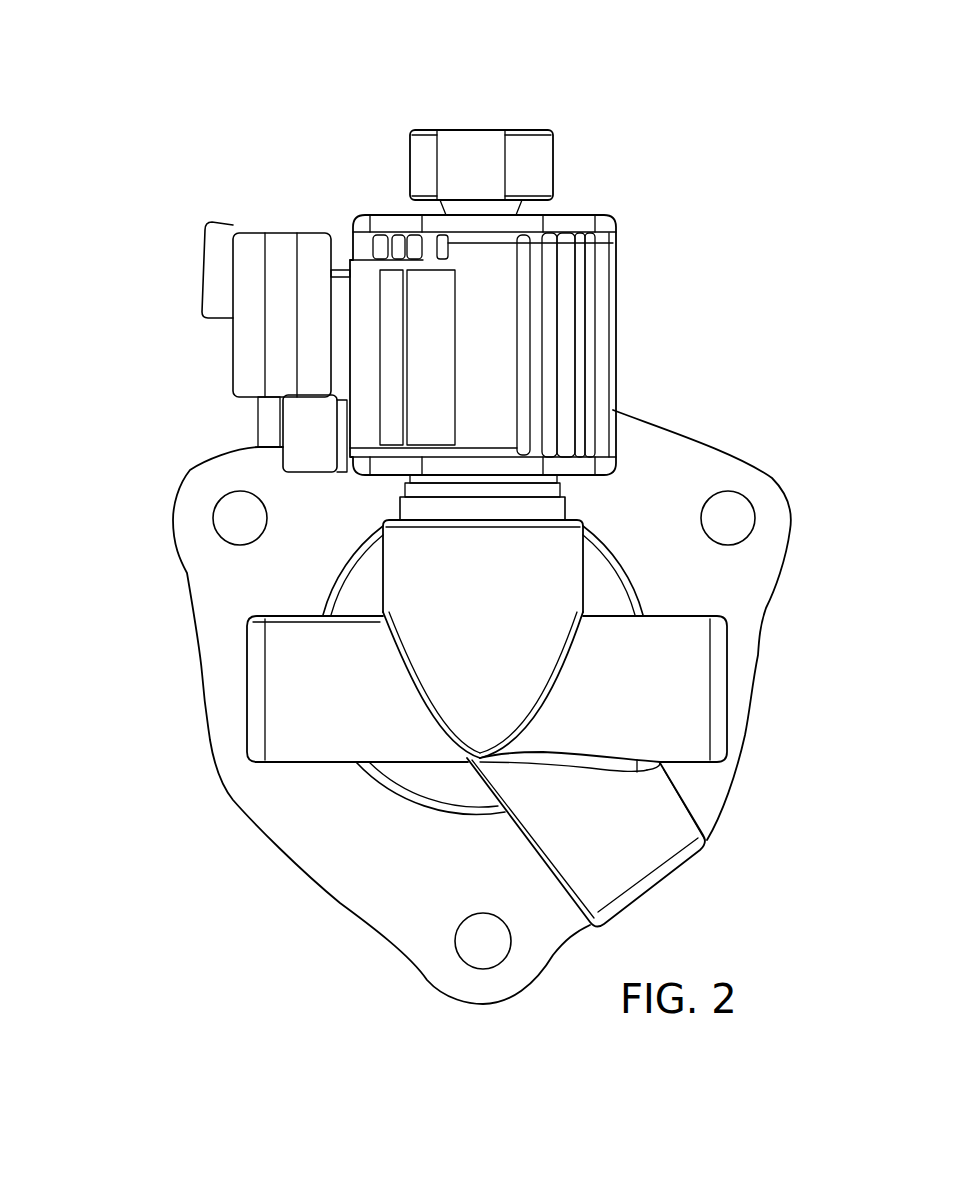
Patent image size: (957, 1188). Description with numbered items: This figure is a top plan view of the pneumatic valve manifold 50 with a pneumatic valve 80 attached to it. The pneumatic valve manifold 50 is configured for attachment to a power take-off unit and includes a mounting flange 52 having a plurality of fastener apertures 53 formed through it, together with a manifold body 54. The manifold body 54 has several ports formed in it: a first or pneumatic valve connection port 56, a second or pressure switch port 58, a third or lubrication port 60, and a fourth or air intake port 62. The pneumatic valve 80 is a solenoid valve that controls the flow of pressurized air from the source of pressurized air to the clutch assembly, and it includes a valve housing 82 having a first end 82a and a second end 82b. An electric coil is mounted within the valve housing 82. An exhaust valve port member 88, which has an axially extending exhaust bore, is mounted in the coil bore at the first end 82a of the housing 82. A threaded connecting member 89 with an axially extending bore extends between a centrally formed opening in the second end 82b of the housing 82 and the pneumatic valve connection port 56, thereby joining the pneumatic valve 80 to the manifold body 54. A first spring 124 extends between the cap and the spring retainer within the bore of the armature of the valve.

The pneumatic valve manifold 50 is at (100, 100).
The mounting flange 52 is at (745, 596).
The fastener apertures 53 is at (240, 492).
The manifold body 54 is at (308, 752).
The pneumatic valve connection port 56 is at (483, 522).
The pressure switch port 58 is at (727, 690).
The lubrication port 60 is at (650, 893).
The air intake port 62 is at (248, 706).
The pneumatic valve 80 is at (648, 275).
The valve housing 82 is at (616, 345).
The first end 82a is at (608, 222).
The second end 82b is at (605, 472).
The exhaust valve port member 88 is at (541, 147).
The threaded connecting member 89 is at (555, 505).
The first spring 124 is at (281, 240).